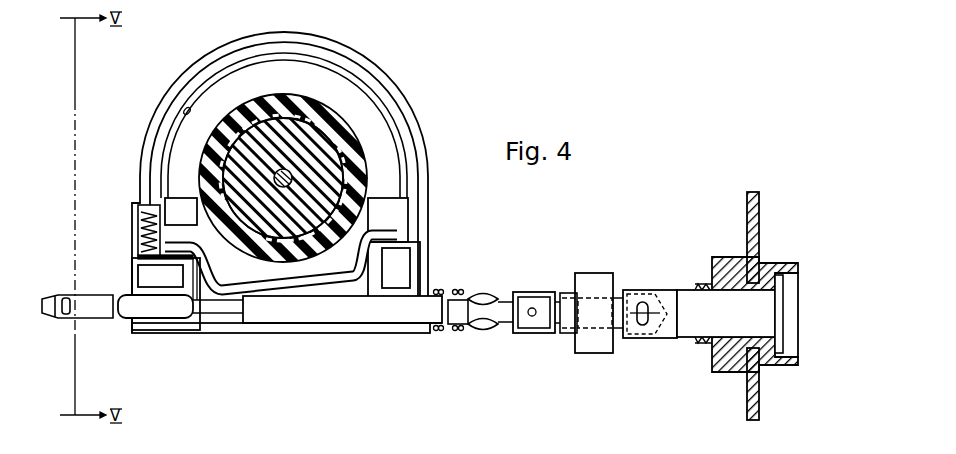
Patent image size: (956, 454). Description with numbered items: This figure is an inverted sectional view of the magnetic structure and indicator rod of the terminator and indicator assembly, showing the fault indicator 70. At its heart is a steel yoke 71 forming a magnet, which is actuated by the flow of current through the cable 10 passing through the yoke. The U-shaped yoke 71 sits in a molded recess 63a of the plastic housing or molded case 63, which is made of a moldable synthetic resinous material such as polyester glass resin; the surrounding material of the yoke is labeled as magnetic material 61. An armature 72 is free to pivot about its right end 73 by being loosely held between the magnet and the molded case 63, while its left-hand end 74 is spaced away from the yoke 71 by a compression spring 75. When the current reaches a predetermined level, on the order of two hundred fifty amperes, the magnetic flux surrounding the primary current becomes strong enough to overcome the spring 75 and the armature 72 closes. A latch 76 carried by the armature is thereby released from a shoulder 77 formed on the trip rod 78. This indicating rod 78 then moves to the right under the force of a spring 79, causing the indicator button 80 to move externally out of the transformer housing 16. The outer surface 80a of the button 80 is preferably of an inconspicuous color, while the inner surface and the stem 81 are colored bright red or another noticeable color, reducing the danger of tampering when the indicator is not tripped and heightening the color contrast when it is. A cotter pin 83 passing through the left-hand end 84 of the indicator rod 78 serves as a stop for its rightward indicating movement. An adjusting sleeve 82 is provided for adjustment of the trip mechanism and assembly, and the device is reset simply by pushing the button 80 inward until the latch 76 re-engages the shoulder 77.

The cable 10 is at (310, 173).
The transformer housing 16 is at (748, 202).
The magnetic material 61 is at (370, 110).
The molded case 63 is at (370, 63).
The molded recess 63a is at (184, 110).
The fault indicator 70 is at (302, 317).
The steel yoke 71 is at (243, 80).
The armature 72 is at (223, 285).
The right end 73 is at (395, 233).
The left-hand end 74 is at (177, 247).
The compression spring 75 is at (137, 228).
The latch 76 is at (205, 300).
The shoulder 77 is at (197, 318).
The trip rod 78 is at (383, 317).
The spring 79 is at (457, 292).
The indicator button 80 is at (782, 287).
The outer surface 80a is at (780, 340).
The stem 81 is at (762, 360).
The adjusting sleeve 82 is at (565, 295).
The cotter pin 83 is at (65, 298).
The left-hand end 84 is at (47, 320).